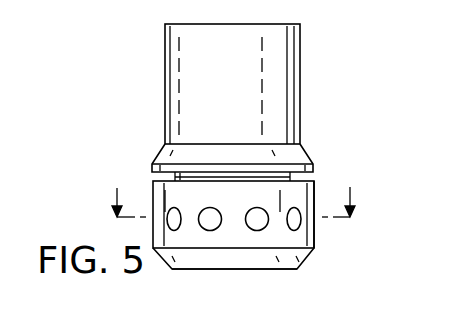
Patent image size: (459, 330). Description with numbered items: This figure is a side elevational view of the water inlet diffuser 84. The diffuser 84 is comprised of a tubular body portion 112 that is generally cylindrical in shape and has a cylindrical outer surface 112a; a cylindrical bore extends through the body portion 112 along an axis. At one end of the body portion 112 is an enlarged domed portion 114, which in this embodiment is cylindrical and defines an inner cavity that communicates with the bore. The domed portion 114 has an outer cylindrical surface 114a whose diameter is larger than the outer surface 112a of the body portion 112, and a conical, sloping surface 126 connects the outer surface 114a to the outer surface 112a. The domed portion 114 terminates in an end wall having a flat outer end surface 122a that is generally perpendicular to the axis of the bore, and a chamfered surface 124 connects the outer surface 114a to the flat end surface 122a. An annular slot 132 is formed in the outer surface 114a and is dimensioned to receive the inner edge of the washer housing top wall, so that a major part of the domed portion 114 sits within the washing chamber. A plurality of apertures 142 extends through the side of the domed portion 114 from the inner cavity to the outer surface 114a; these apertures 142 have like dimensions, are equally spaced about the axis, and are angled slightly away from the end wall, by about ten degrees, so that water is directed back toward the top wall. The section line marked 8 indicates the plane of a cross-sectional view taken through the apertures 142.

The tubular body portion 112 is at (300, 65).
The cylindrical outer surface 112a is at (190, 62).
The diffuser 84 is at (315, 108).
The conical sloping surface 126 is at (157, 150).
The annular slot 132 is at (313, 156).
The domed portion 114 is at (319, 244).
The outer cylindrical surface 114a is at (316, 193).
The chamfered surface 124 is at (304, 258).
The flat outer end surface 122a is at (267, 270).
The apertures 142 is at (211, 230).
The section line 8- 8 is at (235, 205).